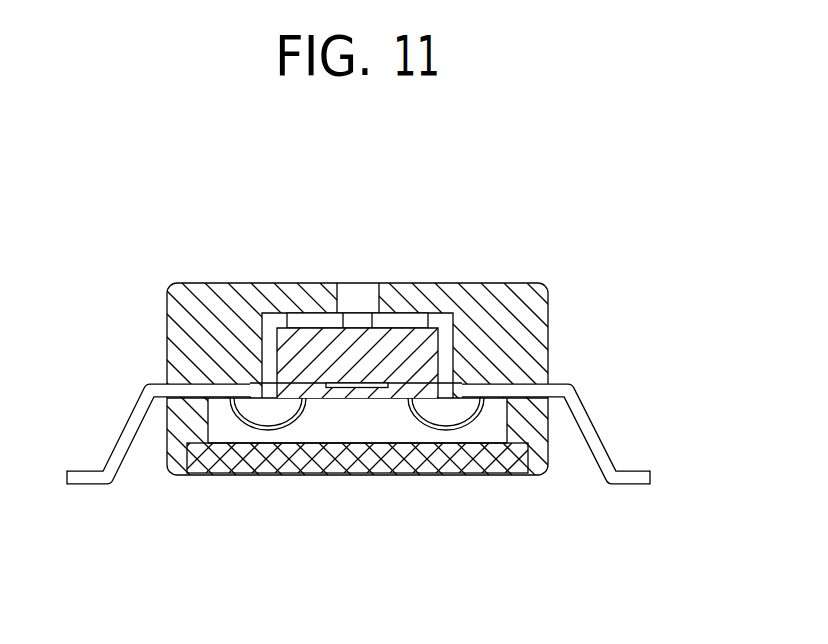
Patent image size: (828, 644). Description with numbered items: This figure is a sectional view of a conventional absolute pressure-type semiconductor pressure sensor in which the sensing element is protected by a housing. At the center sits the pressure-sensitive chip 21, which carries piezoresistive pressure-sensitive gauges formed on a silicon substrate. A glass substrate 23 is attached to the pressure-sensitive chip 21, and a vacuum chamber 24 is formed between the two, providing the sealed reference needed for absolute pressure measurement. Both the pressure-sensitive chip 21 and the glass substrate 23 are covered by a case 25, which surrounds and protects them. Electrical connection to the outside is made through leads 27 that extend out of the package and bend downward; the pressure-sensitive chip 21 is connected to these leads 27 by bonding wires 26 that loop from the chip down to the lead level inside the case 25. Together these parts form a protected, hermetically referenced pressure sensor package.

The pressure-sensitive chip 21 is at (453, 364).
The glass substrate 23 is at (427, 352).
The vacuum chamber 24 is at (350, 388).
The case 25 is at (400, 282).
The bonding wires 26 is at (466, 420).
The leads 27 is at (613, 467).